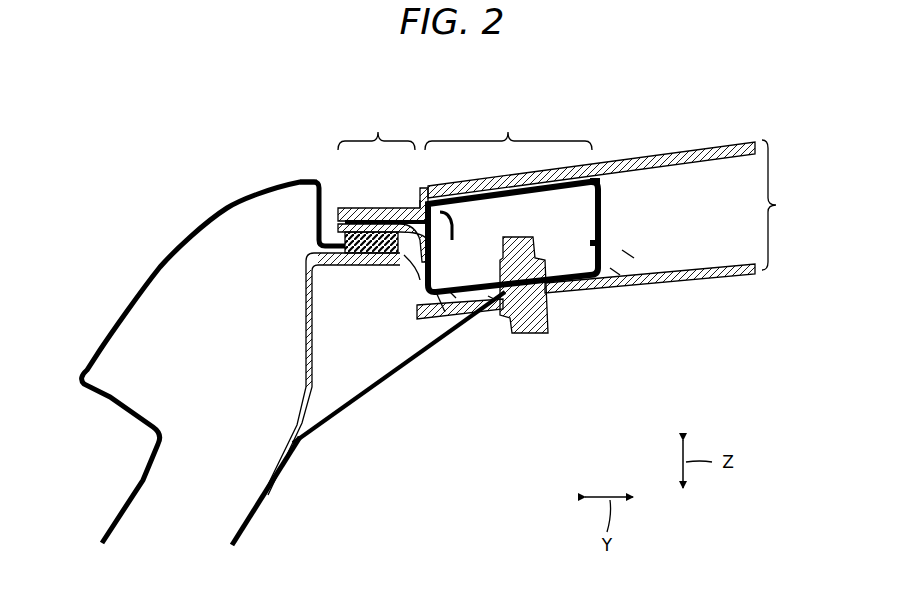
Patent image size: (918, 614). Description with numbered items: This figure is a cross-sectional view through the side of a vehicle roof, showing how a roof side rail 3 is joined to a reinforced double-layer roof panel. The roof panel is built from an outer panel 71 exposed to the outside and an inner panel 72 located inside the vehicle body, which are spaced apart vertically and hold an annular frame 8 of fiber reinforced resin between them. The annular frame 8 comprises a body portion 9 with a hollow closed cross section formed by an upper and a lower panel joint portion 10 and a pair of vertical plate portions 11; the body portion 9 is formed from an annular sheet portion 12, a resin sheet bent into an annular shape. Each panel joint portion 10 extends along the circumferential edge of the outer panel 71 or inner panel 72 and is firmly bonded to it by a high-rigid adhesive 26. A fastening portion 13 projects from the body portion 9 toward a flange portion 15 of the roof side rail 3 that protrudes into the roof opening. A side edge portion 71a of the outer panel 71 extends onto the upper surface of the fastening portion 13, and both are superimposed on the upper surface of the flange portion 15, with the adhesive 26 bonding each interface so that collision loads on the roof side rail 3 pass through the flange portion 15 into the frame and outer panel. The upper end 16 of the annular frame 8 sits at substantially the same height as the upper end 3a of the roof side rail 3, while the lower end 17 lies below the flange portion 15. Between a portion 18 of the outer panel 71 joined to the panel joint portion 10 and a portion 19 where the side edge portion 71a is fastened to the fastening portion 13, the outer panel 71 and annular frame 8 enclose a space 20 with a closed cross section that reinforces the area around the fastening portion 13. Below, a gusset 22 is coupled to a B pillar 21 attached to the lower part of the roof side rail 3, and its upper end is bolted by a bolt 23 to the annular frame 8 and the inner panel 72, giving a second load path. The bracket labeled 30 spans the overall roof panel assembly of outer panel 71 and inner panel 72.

The roof side rail 3 is at (157, 265).
The upper end of the roof side rail 3a is at (308, 180).
The annular frame 8 is at (628, 255).
The body portion 9 is at (600, 215).
The panel joint portion 10 is at (492, 303).
The vertical plate portion 11 is at (452, 295).
The annular sheet portion 12 is at (410, 277).
The fastening portion 13 is at (415, 262).
The flange portion 15 is at (362, 268).
The upper end of the annular frame 16 is at (624, 165).
The lower end of the annular frame 17 is at (440, 325).
The portion of the outer panel 18 is at (508, 132).
The portion of the outer panel 19 is at (378, 132).
The space 20 is at (421, 183).
The B pillar 21 is at (262, 523).
The gusset 22 is at (362, 400).
The bolt 23 is at (540, 336).
The high-rigid adhesive 26 is at (347, 218).
The hood assembly 30 is at (785, 205).
The outer panel 71 is at (730, 142).
The side edge portion 71a is at (347, 205).
The inner panel 72 is at (750, 270).